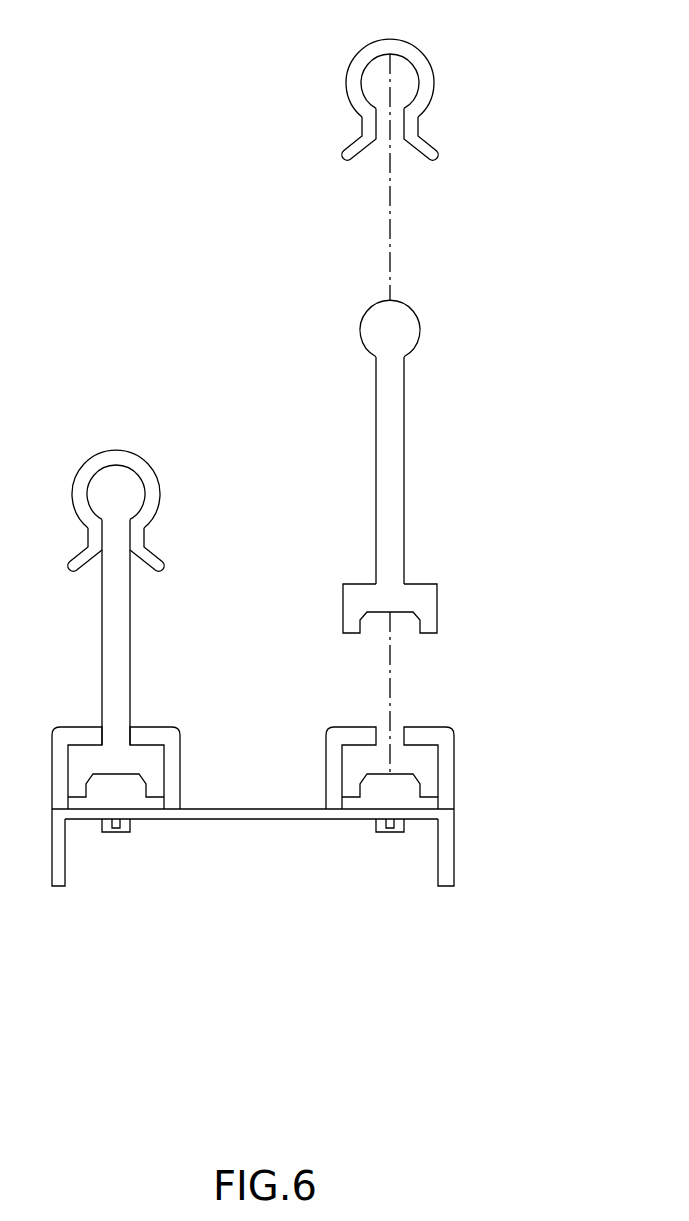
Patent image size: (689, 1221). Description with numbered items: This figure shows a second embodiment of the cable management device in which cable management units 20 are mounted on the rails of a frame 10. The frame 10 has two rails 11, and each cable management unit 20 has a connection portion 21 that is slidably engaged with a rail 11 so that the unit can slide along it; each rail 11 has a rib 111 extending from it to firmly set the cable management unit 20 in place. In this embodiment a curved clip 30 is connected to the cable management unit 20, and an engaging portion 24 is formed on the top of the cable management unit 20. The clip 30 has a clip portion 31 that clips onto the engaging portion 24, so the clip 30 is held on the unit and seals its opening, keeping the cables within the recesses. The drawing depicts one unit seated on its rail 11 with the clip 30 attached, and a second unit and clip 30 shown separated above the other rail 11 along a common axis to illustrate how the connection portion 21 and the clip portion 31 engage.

The frame 10 is at (315, 815).
The rail 11 is at (428, 815).
The rib 111 is at (368, 787).
The cable management unit 20 is at (465, 466).
The connection portion 21 is at (428, 600).
The engaging portion 24 is at (413, 312).
The clip 30 is at (467, 82).
The clip portion 31 is at (415, 125).